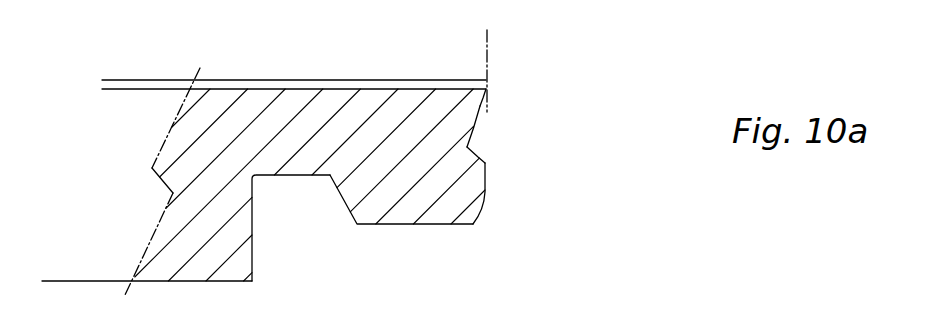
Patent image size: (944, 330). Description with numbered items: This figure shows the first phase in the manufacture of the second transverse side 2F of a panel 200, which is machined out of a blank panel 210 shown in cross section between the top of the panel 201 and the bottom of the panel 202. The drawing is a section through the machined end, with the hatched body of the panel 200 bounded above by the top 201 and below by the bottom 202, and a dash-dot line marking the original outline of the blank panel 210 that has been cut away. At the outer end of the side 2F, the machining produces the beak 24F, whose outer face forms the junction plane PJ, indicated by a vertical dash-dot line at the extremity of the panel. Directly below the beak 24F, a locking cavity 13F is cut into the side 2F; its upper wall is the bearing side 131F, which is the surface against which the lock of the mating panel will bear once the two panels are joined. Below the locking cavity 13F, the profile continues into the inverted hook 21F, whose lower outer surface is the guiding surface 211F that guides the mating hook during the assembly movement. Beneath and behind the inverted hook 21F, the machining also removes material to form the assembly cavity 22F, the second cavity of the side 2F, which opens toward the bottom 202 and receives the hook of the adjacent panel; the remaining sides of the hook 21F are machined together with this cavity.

The second transverse side 2F is at (627, 108).
The panel 200 is at (336, 155).
The blank panel 210 is at (213, 70).
The top of panel 201 is at (351, 80).
The bottom of panel 202 is at (187, 285).
The beak 24F is at (488, 97).
The locking cavity 13F is at (478, 133).
The bearing side 131F is at (478, 150).
The guiding surface 211F is at (482, 200).
The inverted hook 21F is at (440, 200).
The assembly cavity 22F is at (320, 223).
The junction plane PJ is at (500, 63).